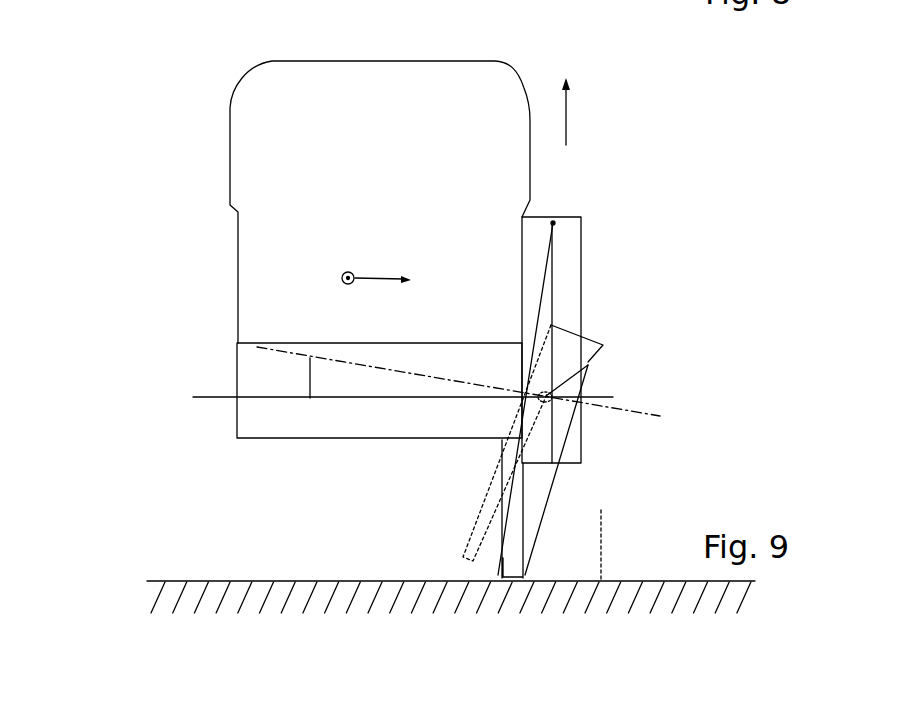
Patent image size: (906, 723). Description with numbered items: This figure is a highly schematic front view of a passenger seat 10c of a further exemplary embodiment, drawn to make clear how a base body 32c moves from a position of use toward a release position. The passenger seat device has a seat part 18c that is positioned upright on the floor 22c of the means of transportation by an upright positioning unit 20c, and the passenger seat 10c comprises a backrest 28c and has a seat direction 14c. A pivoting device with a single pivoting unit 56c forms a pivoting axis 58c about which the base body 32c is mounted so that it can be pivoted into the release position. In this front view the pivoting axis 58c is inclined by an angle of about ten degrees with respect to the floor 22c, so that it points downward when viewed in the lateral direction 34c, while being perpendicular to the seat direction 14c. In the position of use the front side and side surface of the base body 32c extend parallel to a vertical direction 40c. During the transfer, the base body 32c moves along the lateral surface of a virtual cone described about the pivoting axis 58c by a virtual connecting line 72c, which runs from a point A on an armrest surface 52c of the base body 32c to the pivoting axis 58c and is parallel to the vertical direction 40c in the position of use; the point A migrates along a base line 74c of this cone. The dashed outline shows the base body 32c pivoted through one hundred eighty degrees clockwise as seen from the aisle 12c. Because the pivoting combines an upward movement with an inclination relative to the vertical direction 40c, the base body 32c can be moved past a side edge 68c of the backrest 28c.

The passenger seat 10c is at (186, 77).
The aisle 12c is at (673, 506).
The seat direction 14c is at (342, 276).
The seat part 18c is at (278, 377).
The upright positioning unit 20c is at (513, 468).
The floor 22c is at (167, 581).
The backrest 28c is at (290, 192).
The base body 32c is at (573, 231).
The lateral direction 34c is at (385, 278).
The vertical direction 40c is at (567, 113).
The armrest surface 52c is at (540, 217).
The pivoting unit 56c is at (588, 368).
The pivoting axis 58c is at (628, 412).
The side edge 68c is at (528, 212).
The virtual connecting line 72c is at (553, 287).
The base line 74c is at (513, 342).
The point A is at (553, 225).